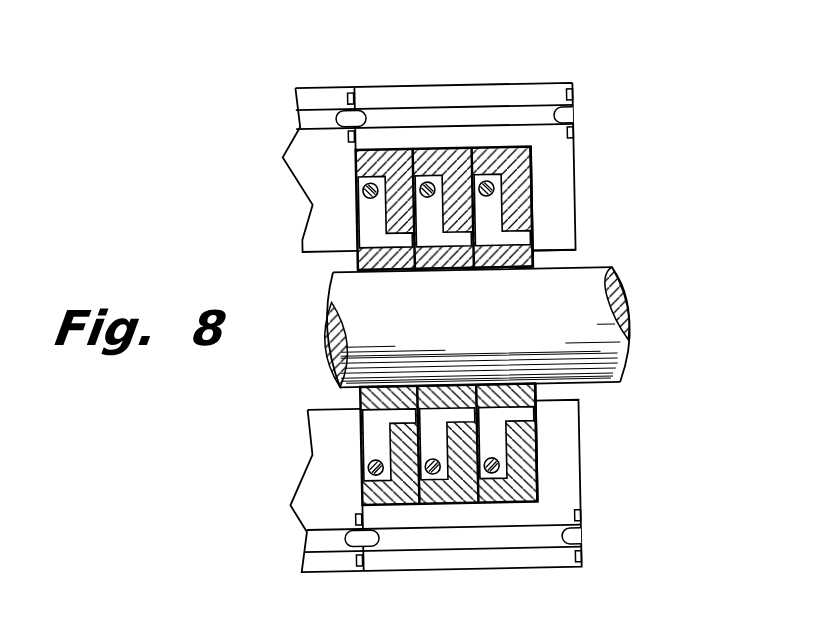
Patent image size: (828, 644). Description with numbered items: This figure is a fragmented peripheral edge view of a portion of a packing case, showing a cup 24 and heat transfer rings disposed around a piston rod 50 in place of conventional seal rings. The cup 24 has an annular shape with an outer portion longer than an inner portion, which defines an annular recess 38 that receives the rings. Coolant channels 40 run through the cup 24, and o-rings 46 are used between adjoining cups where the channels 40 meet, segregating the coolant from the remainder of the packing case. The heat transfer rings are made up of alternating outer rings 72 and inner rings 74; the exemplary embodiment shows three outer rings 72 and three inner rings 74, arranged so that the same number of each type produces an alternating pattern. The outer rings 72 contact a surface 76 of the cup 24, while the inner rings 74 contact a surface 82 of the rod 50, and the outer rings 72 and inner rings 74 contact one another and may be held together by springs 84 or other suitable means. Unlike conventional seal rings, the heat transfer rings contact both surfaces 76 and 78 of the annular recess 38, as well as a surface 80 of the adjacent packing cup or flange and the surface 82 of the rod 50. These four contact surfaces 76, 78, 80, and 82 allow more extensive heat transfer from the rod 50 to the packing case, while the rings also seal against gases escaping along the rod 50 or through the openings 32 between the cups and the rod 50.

The cup 24 is at (314, 87).
The channel 40 is at (537, 114).
The o-ring 46 is at (576, 132).
The outer ring 72 is at (358, 166).
The surface of cup 76 is at (448, 148).
The surface of adjacent packing cup or flange 80 is at (355, 198).
The surface of annular recess 78 is at (535, 206).
The inner ring 74 is at (356, 251).
The annular recess 38 is at (535, 498).
The spring 84 is at (420, 476).
The piston rod 50 is at (632, 321).
The surface of rod 82 is at (458, 270).
The opening 32 is at (596, 393).